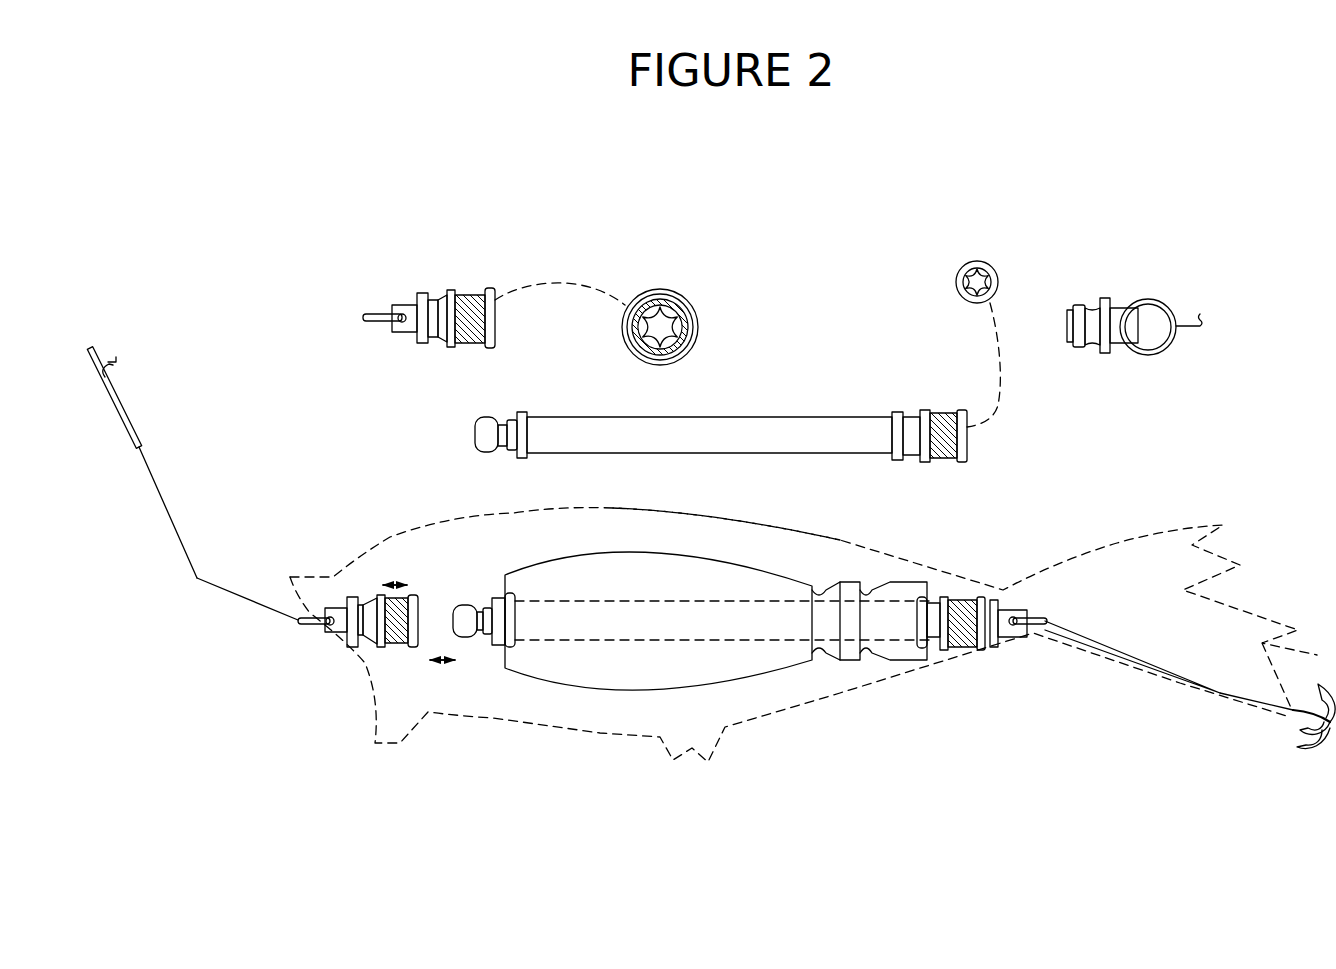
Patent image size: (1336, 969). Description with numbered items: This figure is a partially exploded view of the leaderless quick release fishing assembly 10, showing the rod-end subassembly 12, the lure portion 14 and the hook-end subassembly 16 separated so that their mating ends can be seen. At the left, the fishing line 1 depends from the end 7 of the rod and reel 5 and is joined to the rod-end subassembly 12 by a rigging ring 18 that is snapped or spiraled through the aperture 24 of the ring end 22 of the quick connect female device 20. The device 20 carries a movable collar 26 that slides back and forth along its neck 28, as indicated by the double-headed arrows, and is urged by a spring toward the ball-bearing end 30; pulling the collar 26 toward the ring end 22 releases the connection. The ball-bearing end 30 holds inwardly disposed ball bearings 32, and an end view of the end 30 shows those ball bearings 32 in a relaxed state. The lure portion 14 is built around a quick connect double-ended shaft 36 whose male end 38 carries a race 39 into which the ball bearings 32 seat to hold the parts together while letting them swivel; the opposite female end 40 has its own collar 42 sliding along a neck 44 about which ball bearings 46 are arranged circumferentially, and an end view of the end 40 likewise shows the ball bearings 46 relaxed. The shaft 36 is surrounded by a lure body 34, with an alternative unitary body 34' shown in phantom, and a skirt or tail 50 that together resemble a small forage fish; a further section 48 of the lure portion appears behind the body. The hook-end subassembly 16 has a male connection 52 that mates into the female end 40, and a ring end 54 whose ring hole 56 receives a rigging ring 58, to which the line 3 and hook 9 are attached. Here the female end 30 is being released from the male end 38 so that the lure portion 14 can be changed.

The fishing leader or line 1 is at (237, 592).
The line 3 is at (1190, 325).
The rod and reel 5 is at (150, 405).
The end of rod and reel 7 is at (197, 578).
The hook 9 is at (1320, 752).
The leaderless quick release fishing assembly 10 is at (812, 536).
The rod-end subassembly 12 is at (512, 438).
The lure portion 14 is at (751, 458).
The hook-end subassembly 16 is at (1105, 459).
The rigging ring 18 is at (363, 317).
The quick connect female device 20 is at (433, 292).
The ring end 22 is at (397, 305).
The hole or aperture 24 is at (402, 324).
The movable collar or slide 26 is at (470, 347).
The shaft or neck 28 is at (436, 343).
The ball-bearing end 30 is at (497, 320).
The ball bearings 32 is at (688, 312).
The fishing lure body or head 34 is at (658, 603).
The alternative body 34' is at (726, 510).
The shaft 36 is at (690, 449).
The male end or first end 38 is at (512, 405).
The raceway or race 39 is at (497, 452).
The female end 40 is at (996, 432).
The slide or collar 42 is at (948, 462).
The shaft or neck 44 is at (898, 410).
The ball bearings 46 is at (995, 285).
The rear body section 48 is at (907, 662).
The skirt or tail 50 is at (1114, 545).
The male connection 52 is at (1080, 348).
The ring end 54 is at (1113, 337).
The ring hole 56 is at (1122, 303).
The rigging ring 58 is at (1158, 346).